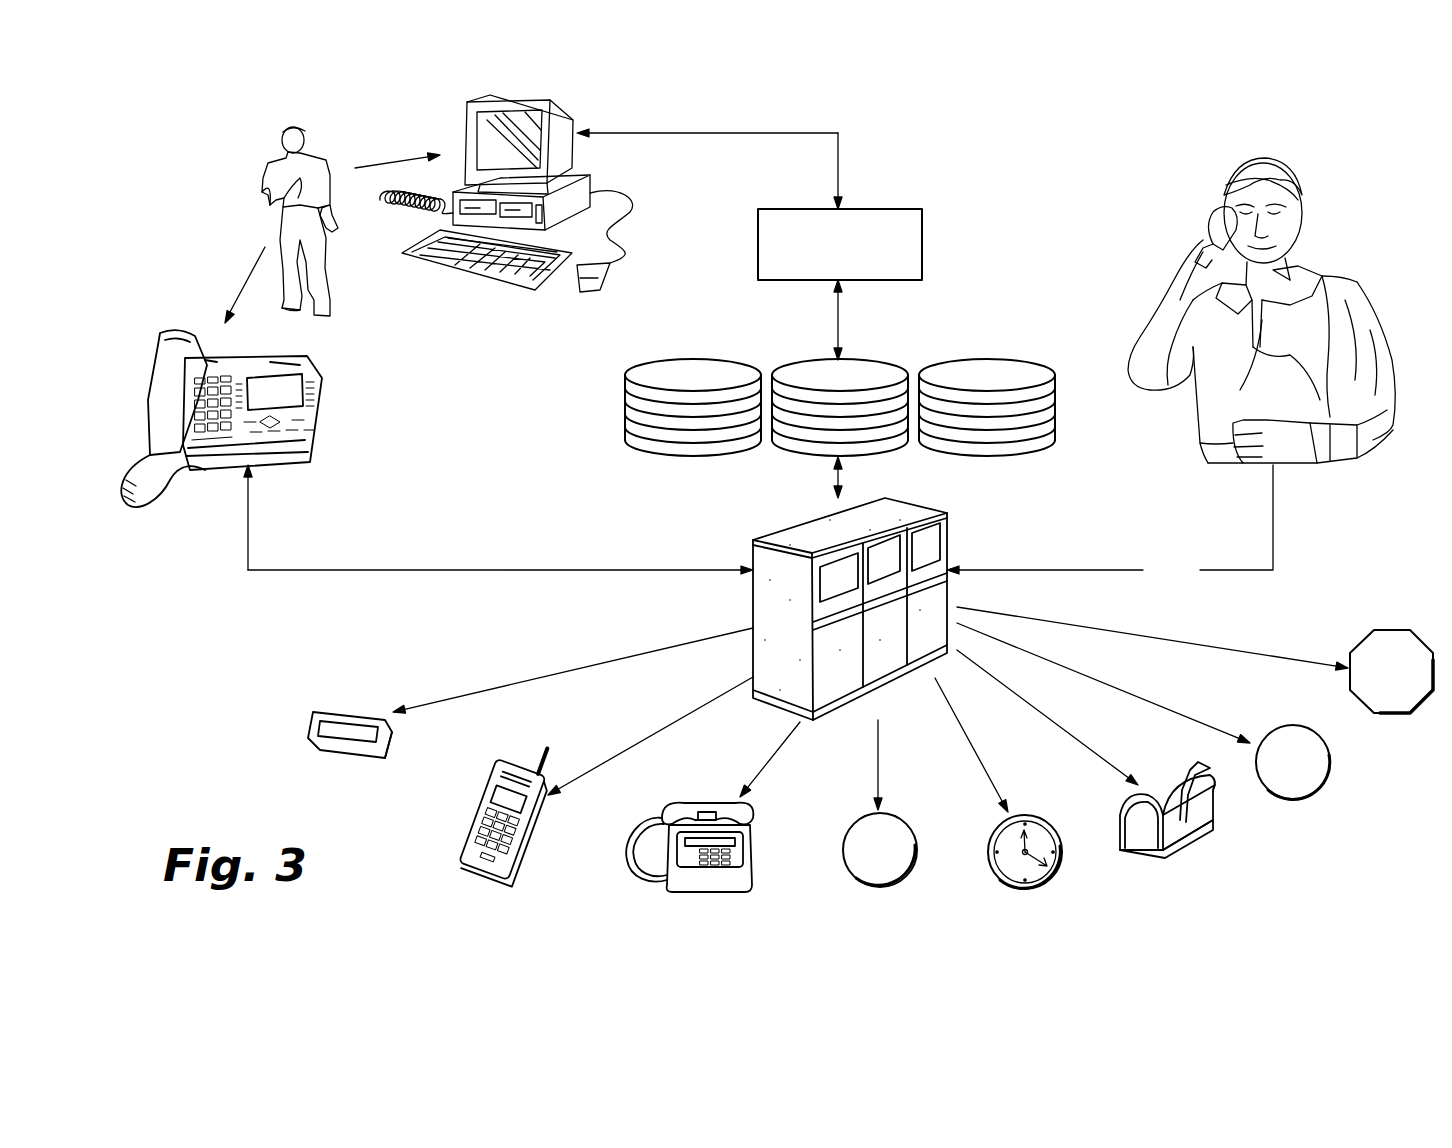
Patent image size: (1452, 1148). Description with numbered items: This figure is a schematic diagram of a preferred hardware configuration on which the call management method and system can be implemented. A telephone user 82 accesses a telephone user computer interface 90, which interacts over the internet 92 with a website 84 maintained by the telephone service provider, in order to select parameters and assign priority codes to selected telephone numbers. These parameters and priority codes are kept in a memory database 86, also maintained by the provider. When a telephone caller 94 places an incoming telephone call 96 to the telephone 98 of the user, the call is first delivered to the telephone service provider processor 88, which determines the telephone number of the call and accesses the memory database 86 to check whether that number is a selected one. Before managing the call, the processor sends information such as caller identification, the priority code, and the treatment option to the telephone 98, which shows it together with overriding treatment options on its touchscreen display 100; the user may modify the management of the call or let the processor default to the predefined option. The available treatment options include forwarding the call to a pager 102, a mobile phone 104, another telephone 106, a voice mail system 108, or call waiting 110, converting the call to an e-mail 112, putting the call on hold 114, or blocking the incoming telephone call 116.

The telephone user 82 is at (317, 153).
The website 84 is at (922, 240).
The memory database 86 is at (1055, 393).
The telephone service provider processor 88 is at (947, 528).
The telephone user computer interface 90 is at (573, 118).
The internet 92 is at (893, 165).
The telephone caller 94 is at (1293, 172).
The incoming telephone call 96 is at (1273, 540).
The telephone 98 is at (437, 452).
The touchscreen display 100 is at (288, 390).
The pager 102 is at (333, 705).
The mobile phone 104 is at (478, 813).
The another telephone 106 is at (690, 805).
The voice mail system 108 is at (845, 838).
The call waiting 110 is at (990, 840).
The e-mail 112 is at (1200, 833).
The hold 114 is at (1320, 787).
The blocking the incoming telephone call 116 is at (1388, 713).